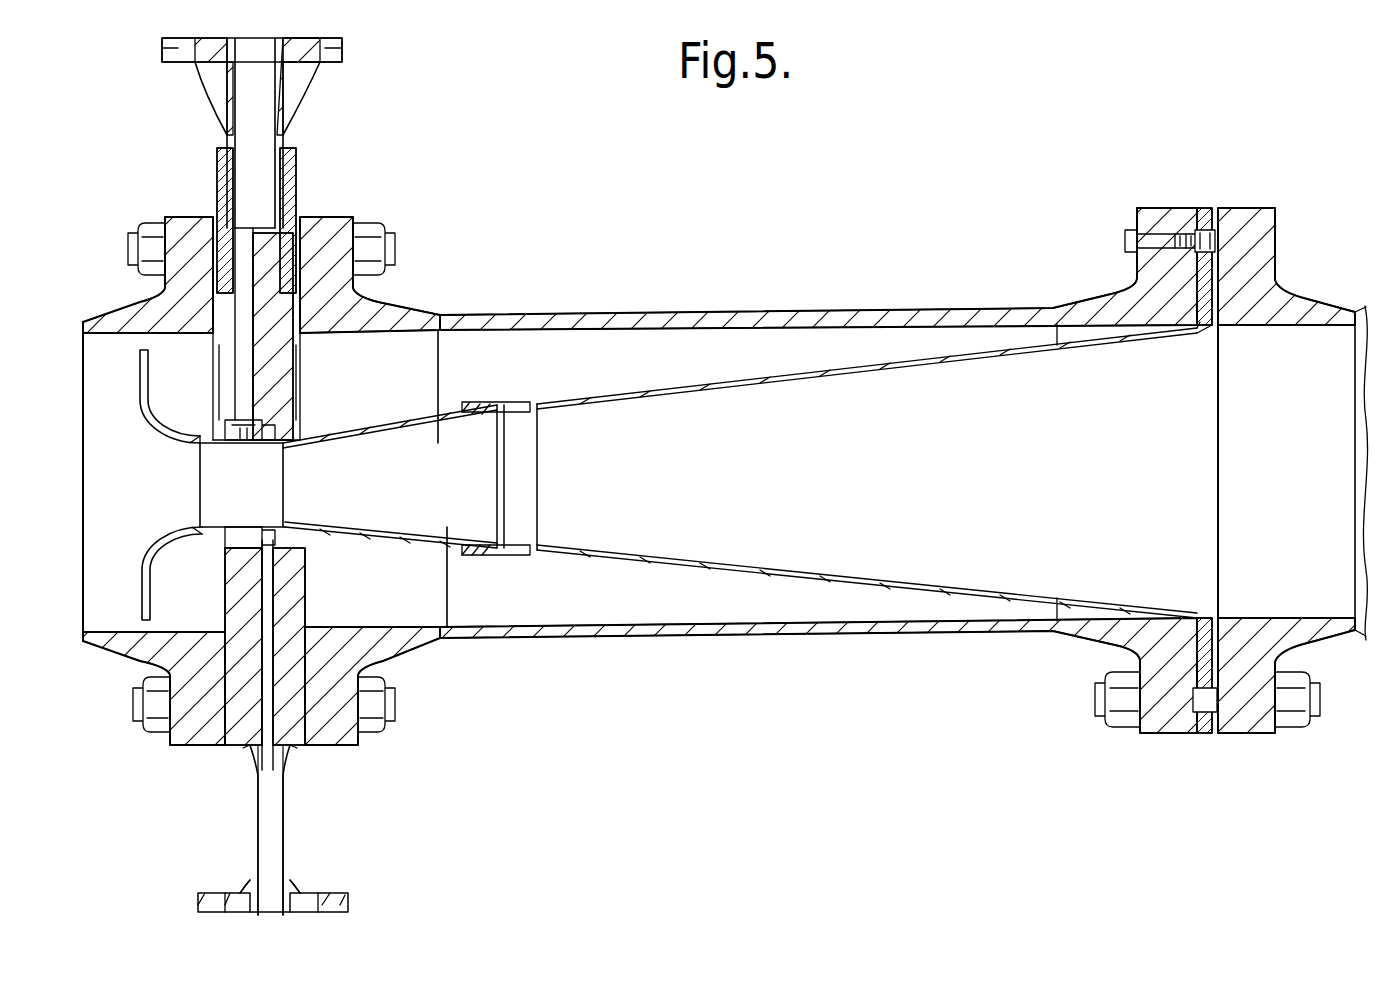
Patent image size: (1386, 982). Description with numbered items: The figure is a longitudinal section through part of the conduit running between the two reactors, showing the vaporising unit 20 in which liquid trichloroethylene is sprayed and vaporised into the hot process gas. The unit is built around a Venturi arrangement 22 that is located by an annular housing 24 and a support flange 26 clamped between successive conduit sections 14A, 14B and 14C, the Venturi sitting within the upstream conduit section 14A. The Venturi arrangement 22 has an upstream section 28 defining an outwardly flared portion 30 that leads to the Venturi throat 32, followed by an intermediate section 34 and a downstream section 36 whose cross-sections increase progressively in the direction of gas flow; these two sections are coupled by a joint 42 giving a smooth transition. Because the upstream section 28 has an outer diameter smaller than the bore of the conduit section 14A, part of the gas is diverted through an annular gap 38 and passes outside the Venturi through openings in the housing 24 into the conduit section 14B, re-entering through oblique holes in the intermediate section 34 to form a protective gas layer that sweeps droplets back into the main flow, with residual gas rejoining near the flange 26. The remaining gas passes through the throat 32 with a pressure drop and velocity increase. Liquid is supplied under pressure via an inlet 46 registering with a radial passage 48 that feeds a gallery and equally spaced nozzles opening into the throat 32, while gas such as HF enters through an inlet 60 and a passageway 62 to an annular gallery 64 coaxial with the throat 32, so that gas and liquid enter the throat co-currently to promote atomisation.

The vaporising unit 20 is at (734, 296).
The upstream conduit section 14A is at (117, 642).
The intermediate conduit section 14B is at (722, 640).
The downstream conduit section 14C is at (1333, 612).
The Venturi arrangement 22 is at (437, 606).
The annular housing 24 is at (292, 191).
The support flange 26 is at (1220, 326).
The upstream section 28 is at (119, 546).
The outwardly flared portion 30 is at (140, 381).
The Venturi throat 32 is at (228, 522).
The intermediate section 34 is at (381, 527).
The downstream section 36 is at (812, 380).
The annular gap 38 is at (140, 622).
The joint 42 is at (492, 407).
The liquid inlet 46 is at (291, 836).
The radial passage 48 is at (271, 581).
The gas inlet 60 is at (280, 121).
The passageway 62 is at (245, 372).
The annular gallery 64 is at (230, 427).